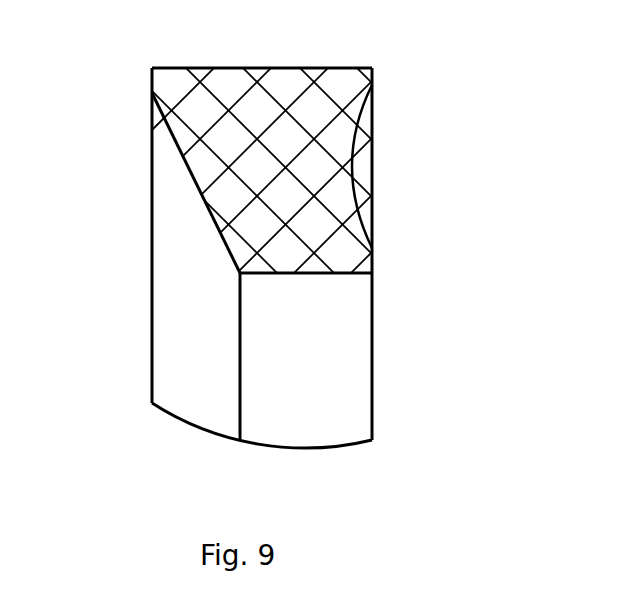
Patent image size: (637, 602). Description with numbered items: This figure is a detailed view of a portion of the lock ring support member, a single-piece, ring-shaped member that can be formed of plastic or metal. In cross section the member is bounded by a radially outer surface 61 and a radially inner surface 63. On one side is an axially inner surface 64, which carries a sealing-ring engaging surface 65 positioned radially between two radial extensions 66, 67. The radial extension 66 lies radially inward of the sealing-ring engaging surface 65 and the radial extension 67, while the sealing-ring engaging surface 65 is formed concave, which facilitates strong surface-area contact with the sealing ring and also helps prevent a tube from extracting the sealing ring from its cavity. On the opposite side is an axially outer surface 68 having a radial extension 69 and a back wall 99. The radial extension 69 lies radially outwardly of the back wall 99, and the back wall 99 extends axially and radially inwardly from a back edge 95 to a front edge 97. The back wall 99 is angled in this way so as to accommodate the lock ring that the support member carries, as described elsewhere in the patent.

The radially outer surface 61 is at (320, 60).
The radially inner surface 63 is at (350, 358).
The axially inner surface 64 is at (448, 132).
The sealing-ring engaging surface 65 is at (374, 155).
The radial extension 66 is at (379, 247).
The radial extension 67 is at (379, 77).
The axially outer surface 68 is at (94, 238).
The radial extension 69 is at (139, 90).
The back edge 95 is at (131, 115).
The front edge 97 is at (227, 432).
The back wall 99 is at (152, 293).